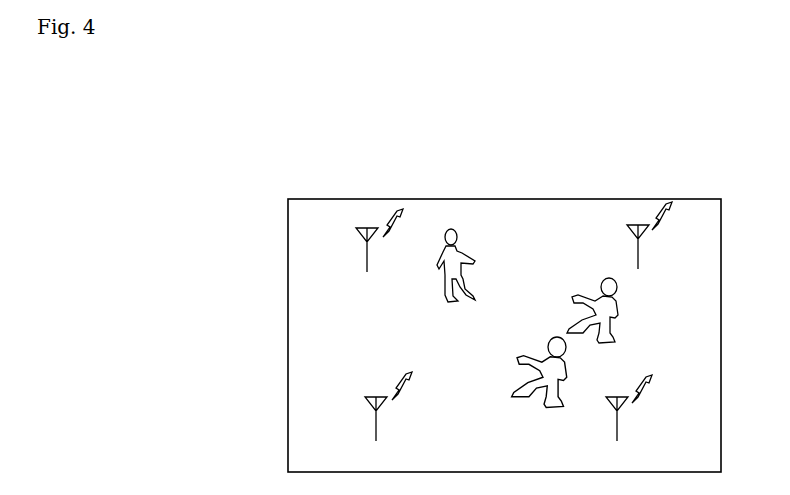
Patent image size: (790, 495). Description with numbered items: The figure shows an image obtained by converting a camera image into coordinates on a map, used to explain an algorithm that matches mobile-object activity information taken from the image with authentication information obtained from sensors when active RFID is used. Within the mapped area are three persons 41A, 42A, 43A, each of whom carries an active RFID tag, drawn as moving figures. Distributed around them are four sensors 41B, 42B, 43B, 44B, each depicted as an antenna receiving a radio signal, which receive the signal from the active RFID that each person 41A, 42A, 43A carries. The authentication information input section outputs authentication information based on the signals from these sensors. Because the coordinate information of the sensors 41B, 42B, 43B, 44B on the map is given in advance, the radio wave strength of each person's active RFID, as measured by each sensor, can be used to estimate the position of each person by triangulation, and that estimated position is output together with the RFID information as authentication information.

The person 41A is at (450, 229).
The person 42A is at (555, 336).
The person 43A is at (607, 278).
The sensor 41B is at (372, 247).
The sensor 42B is at (382, 412).
The sensor 43B is at (643, 242).
The sensor 44B is at (622, 412).